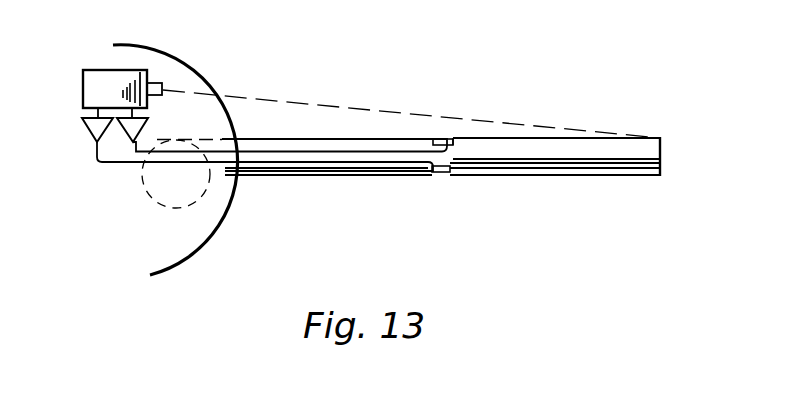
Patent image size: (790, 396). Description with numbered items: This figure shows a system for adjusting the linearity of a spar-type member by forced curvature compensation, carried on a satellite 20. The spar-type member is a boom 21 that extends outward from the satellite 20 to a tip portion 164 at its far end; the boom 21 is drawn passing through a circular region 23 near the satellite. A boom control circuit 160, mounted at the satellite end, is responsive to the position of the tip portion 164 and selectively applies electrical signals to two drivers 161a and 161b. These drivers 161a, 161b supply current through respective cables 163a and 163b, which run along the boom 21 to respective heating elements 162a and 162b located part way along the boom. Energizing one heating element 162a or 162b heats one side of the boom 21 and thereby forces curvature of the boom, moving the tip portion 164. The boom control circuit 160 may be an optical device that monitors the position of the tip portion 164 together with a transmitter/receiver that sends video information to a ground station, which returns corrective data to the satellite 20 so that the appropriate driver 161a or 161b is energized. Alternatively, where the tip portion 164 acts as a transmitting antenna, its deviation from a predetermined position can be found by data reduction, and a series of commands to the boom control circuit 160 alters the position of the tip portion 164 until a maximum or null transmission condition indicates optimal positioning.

The satellite 20 is at (196, 244).
The boom 21 is at (534, 176).
The circular opening 23 is at (152, 203).
The boom control circuit 160 is at (100, 73).
The driver 161a is at (143, 131).
The driver 161b is at (93, 128).
The heating element 162a is at (449, 141).
The heating element 162b is at (443, 174).
The cable 163a is at (254, 150).
The cable 163b is at (431, 167).
The tip portion 164 is at (661, 153).